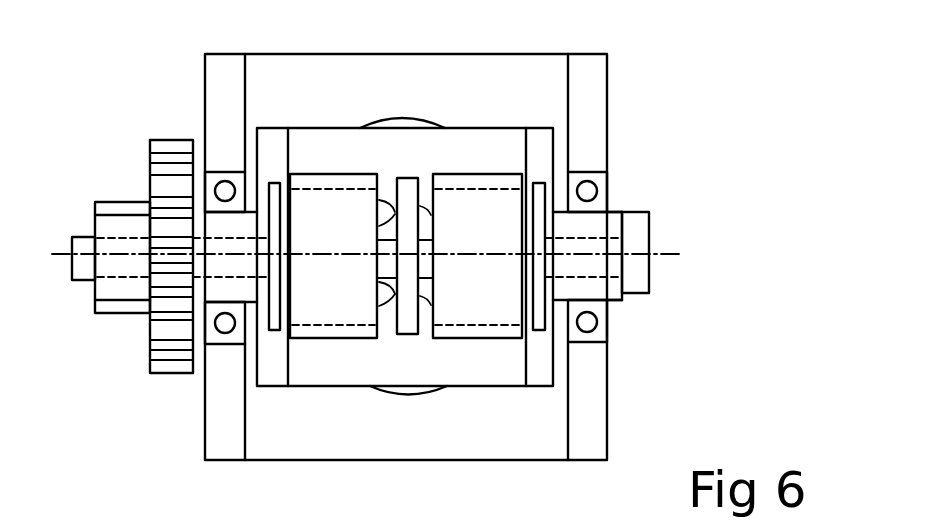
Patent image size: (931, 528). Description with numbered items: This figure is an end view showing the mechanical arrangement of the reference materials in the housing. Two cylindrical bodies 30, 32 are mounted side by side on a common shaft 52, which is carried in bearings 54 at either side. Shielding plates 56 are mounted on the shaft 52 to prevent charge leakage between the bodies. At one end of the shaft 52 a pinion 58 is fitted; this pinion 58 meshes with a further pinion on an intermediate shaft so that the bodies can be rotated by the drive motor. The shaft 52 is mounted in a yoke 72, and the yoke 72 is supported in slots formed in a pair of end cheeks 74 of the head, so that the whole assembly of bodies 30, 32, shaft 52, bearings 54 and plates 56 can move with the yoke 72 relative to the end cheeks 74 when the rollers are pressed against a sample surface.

The cylindrical body 30 is at (490, 218).
The cylindrical body 32 is at (347, 330).
The common shaft 52 is at (623, 248).
The bearings 54 is at (230, 289).
The shielding plates 56 is at (270, 183).
The pinion 58 is at (157, 168).
The yoke 72 is at (597, 287).
The end cheeks 74 is at (610, 88).